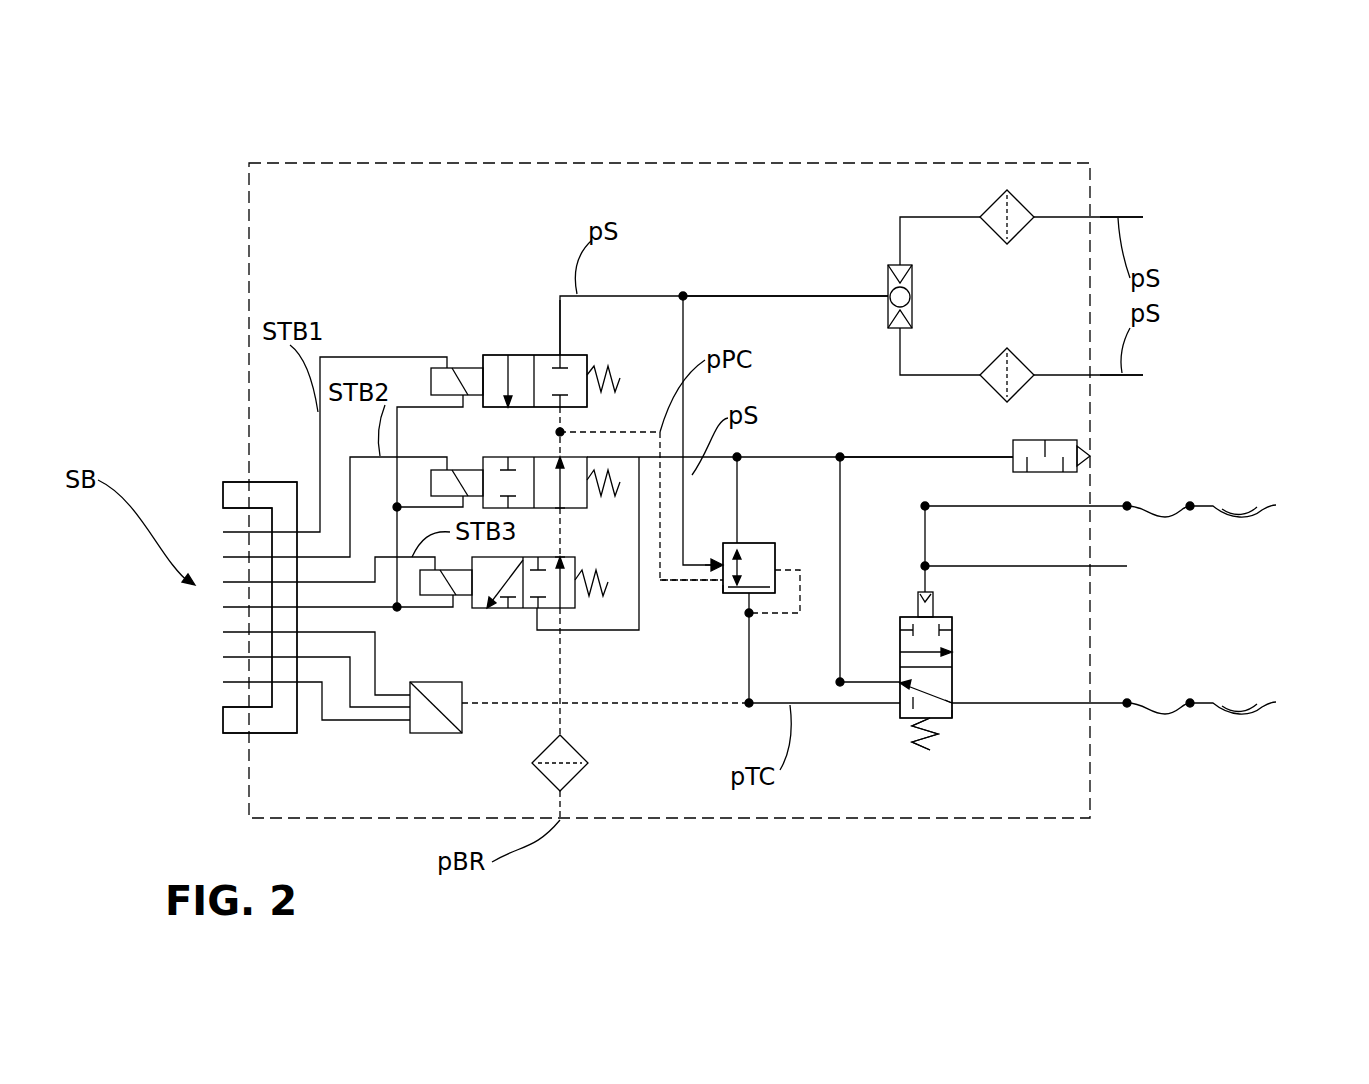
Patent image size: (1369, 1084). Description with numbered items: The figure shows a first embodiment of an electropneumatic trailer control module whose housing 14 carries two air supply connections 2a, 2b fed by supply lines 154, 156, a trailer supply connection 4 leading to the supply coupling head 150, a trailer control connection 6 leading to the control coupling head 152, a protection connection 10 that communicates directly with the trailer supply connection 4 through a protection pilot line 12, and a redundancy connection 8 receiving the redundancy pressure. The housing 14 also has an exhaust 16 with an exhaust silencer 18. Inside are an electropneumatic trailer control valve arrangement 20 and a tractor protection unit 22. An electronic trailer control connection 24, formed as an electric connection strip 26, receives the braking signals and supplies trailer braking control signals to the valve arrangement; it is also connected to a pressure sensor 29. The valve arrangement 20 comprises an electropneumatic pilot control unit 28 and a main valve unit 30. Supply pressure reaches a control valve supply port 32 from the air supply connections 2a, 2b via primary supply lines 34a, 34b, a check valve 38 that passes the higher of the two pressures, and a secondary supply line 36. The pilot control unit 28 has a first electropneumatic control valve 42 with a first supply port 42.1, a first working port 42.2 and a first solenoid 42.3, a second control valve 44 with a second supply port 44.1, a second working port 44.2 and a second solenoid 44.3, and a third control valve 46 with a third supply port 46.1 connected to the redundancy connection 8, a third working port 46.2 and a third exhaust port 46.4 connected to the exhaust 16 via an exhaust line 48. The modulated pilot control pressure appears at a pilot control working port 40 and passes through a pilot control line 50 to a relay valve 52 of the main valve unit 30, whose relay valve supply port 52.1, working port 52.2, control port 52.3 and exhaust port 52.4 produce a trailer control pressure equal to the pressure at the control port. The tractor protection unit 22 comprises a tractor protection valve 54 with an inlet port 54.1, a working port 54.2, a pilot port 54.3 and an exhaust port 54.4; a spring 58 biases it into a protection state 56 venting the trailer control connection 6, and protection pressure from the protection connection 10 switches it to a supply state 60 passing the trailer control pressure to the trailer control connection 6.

The housing 14 is at (330, 163).
The electropneumatic trailer control valve arrangement 20 is at (555, 258).
The electronic trailer control connection 24 is at (230, 482).
The electric connection strip 26 is at (230, 482).
The pressure sensor 29 is at (434, 733).
The control valve supply port 32 is at (558, 350).
The secondary supply line 36 is at (747, 296).
The check valve 38 is at (888, 285).
The primary supply line 34a is at (927, 216).
The primary supply line 34b is at (950, 375).
The air supply connection 2a is at (1093, 218).
The air supply connection 2b is at (1093, 375).
The supply line 154 is at (1133, 218).
The supply line 156 is at (1133, 375).
The electropneumatic pilot control unit 28 is at (490, 328).
The first electropneumatic control valve 42 is at (481, 358).
The first electropneumatic supply port 42.1 is at (565, 355).
The first electropneumatic working port 42.2 is at (557, 414).
The first solenoid 42.3 is at (430, 380).
The pilot control working port 40 is at (620, 424).
The second electropneumatic control valve 44 is at (482, 465).
The second electropneumatic supply port 44.1 is at (563, 510).
The second electropneumatic working port 44.2 is at (563, 447).
The second solenoid 44.3 is at (430, 482).
The third electropneumatic control valve 46 is at (466, 617).
The third electropneumatic supply port 46.1 is at (561, 611).
The third electropneumatic working port 46.2 is at (563, 553).
The third exhaust port 46.4 is at (537, 608).
The redundancy connection 8 is at (560, 820).
The exhaust line 48 is at (870, 455).
The main valve unit 30 is at (782, 518).
The relay valve 52 is at (777, 562).
The relay valve supply port 52.1 is at (722, 562).
The relay valve working port 52.2 is at (752, 597).
The relay valve control port 52.3 is at (723, 590).
The relay valve exhaust port 52.4 is at (740, 542).
The pilot control line 50 is at (693, 580).
The exhaust silencer 18 is at (1040, 440).
The exhaust 16 is at (1104, 452).
The protection pilot line 12 is at (927, 540).
The trailer supply connection 4 is at (1093, 507).
The trailer control connection 6 is at (1093, 705).
The protection connection 10 is at (1092, 567).
The supply coupling head 150 is at (1247, 500).
The control coupling head 152 is at (1247, 697).
The tractor protection unit 22 is at (905, 765).
The tractor protection valve 54 is at (933, 722).
The tractor protection inlet port 54.1 is at (898, 706).
The tractor protection working port 54.2 is at (953, 702).
The tractor protection pilot port 54.3 is at (935, 603).
The tractor protection exhaust port 54.4 is at (898, 681).
The protection state 56 is at (960, 723).
The spring 58 is at (933, 740).
The supply state 60 is at (960, 655).